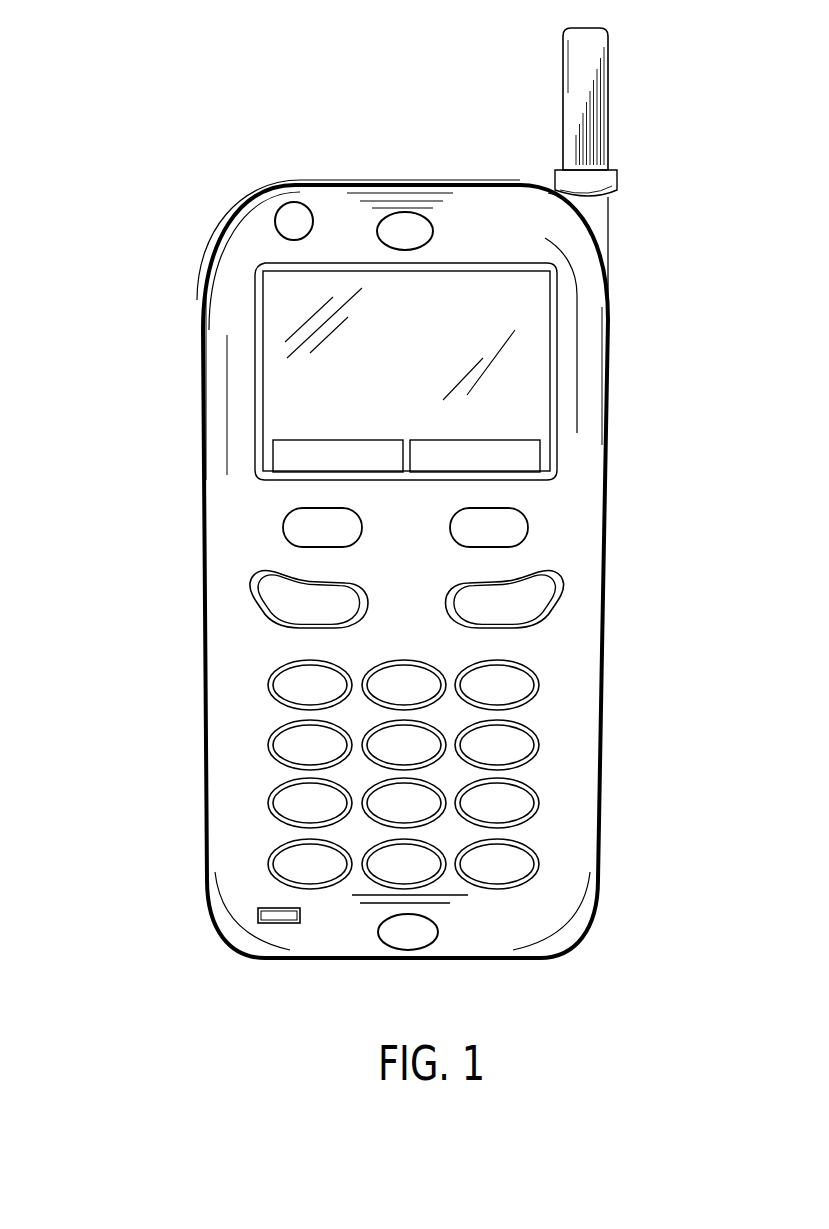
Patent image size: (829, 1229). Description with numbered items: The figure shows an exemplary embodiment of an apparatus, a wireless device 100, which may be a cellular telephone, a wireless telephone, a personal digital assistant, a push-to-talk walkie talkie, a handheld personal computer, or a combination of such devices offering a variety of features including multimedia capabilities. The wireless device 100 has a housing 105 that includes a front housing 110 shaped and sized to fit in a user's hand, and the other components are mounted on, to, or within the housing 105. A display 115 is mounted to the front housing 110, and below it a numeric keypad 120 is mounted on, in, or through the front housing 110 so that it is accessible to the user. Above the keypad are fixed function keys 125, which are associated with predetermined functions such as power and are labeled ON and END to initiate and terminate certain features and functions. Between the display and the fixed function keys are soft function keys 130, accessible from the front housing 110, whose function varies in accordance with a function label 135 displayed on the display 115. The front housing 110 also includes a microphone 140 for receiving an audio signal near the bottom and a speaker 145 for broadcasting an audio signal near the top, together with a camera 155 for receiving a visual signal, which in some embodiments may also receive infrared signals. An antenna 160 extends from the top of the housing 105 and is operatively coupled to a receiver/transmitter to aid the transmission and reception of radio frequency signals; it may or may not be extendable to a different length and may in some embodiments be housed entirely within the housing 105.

The wireless device 100 is at (120, 105).
The housing 105 is at (609, 323).
The front housing 110 is at (562, 235).
The display 115 is at (556, 403).
The numeric keypad 120 is at (569, 728).
The fixed function keys 125 is at (579, 597).
The soft function keys 130 is at (266, 518).
The function label 135 is at (258, 458).
The microphone 140 is at (425, 947).
The speaker 145 is at (416, 213).
The camera 155 is at (303, 206).
The antenna 160 is at (609, 118).